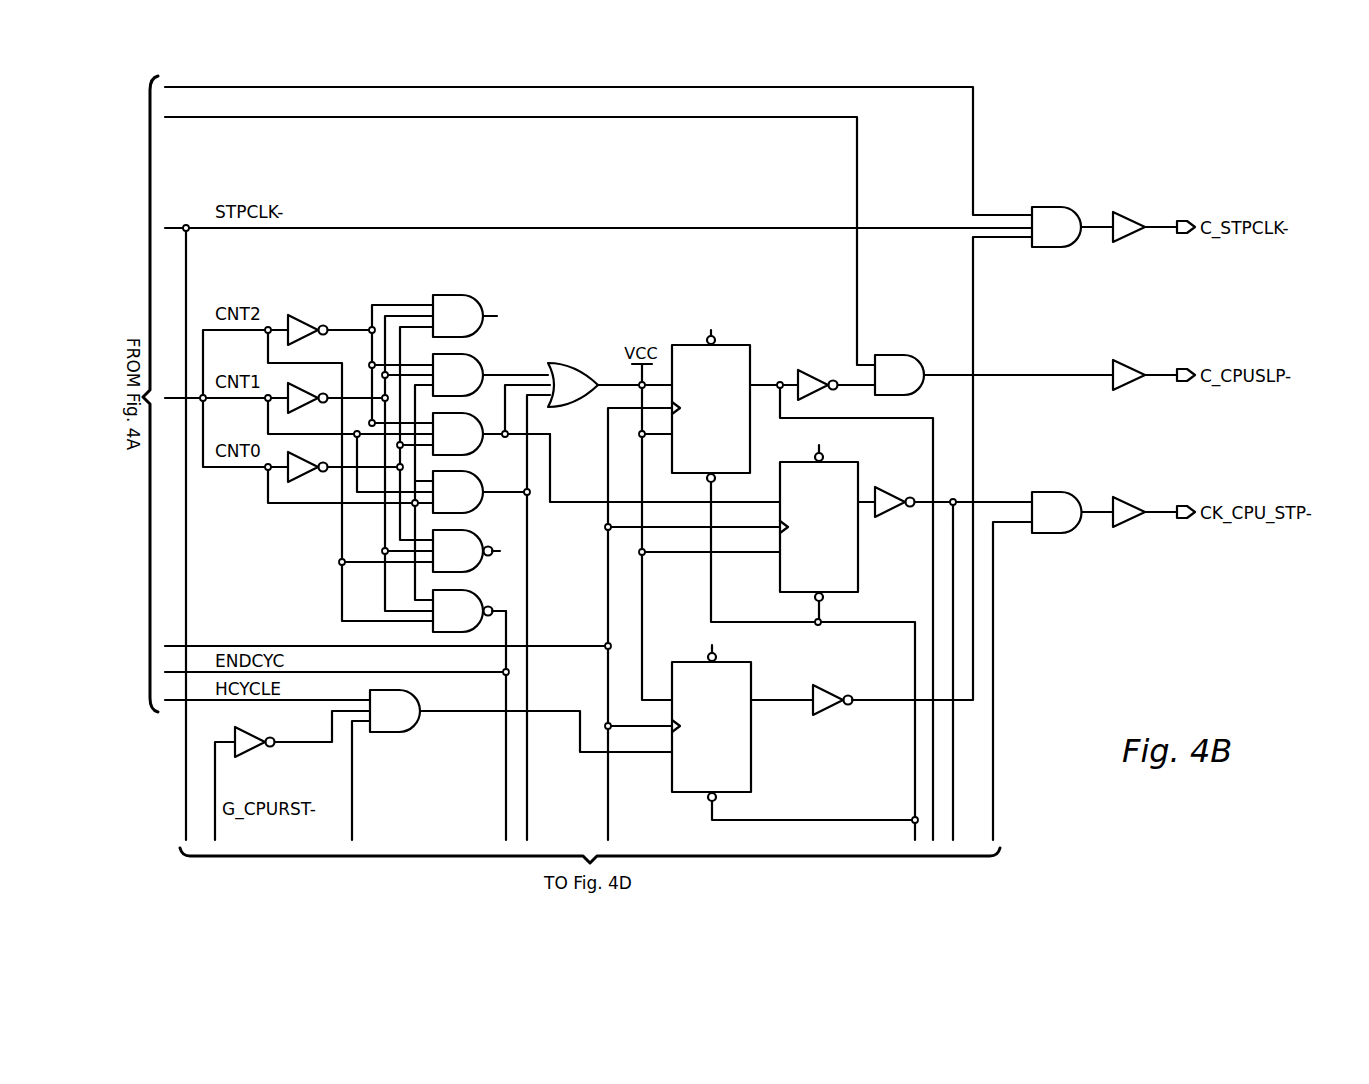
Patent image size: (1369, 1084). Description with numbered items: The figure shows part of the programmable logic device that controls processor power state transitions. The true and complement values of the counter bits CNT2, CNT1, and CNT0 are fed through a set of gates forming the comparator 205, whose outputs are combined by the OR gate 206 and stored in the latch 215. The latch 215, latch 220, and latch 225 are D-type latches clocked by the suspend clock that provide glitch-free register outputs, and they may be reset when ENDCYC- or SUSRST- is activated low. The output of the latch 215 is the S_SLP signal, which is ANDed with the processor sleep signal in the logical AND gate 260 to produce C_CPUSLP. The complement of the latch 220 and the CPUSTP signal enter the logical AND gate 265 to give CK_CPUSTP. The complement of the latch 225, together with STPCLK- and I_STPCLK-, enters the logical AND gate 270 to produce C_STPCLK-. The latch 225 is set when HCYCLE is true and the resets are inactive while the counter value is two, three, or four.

The comparator 205 is at (457, 293).
The OR gate 206 is at (572, 361).
The latch 215 is at (725, 343).
The latch 220 is at (862, 545).
The latch 225 is at (692, 660).
The logical AND gate 260 is at (900, 353).
The logical AND gate 265 is at (1057, 490).
The logical AND gate 270 is at (1057, 205).